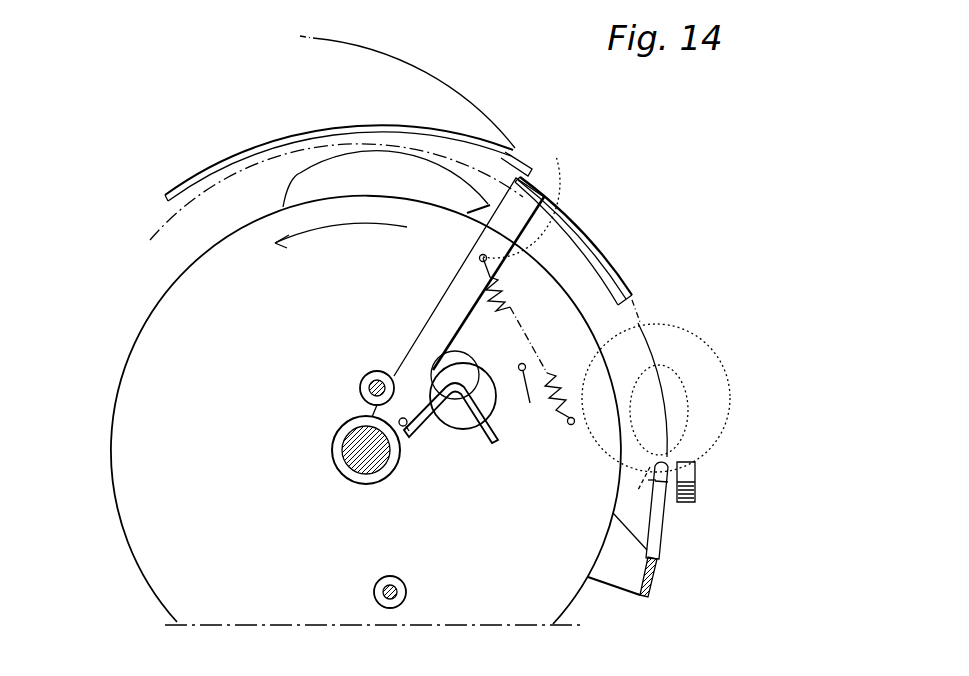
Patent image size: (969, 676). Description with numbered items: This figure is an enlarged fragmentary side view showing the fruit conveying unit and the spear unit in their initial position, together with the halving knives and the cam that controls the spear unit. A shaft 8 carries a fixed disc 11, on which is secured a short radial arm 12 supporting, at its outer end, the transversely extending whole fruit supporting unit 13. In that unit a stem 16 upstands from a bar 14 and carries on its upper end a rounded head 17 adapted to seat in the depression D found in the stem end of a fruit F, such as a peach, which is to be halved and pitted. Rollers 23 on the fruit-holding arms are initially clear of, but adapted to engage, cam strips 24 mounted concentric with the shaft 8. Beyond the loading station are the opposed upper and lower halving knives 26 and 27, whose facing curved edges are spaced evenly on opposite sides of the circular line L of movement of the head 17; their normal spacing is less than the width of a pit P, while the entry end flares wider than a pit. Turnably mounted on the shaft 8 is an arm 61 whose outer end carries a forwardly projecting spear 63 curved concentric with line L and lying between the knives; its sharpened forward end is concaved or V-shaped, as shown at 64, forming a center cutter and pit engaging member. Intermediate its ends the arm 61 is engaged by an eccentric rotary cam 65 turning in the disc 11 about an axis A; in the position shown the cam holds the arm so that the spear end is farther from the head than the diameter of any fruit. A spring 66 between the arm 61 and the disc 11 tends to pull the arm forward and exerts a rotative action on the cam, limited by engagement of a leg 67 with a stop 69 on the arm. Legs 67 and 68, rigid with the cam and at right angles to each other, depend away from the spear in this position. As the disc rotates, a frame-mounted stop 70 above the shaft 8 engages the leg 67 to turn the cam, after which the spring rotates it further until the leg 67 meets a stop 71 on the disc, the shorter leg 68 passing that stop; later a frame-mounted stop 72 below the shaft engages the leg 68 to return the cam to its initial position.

The shaft 8 is at (348, 467).
The disc 11 is at (133, 403).
The radial arm 12 is at (617, 577).
The whole fruit supporting unit 13 is at (679, 554).
The bar 14 is at (653, 577).
The stem 16 is at (660, 527).
The rounded head 17 is at (667, 463).
The roller 23 is at (697, 474).
The cam strip 24 is at (205, 165).
The upper halving knife 26 is at (453, 93).
The lower halving knife 27 is at (307, 183).
The arm 61 is at (463, 290).
The spear 63 is at (610, 266).
The concaved or V-shaped forward end 64 is at (635, 296).
The eccentric rotary cam 65 is at (450, 365).
The spring 66 is at (517, 288).
The leg 67 is at (427, 422).
The leg 68 is at (497, 436).
The stop 69 is at (410, 432).
The frame-mounted stop 70 is at (361, 378).
The stop 71 is at (530, 394).
The frame-mounted stop 72 is at (407, 578).
The circular line of movement L is at (567, 220).
The axis of rotation A is at (465, 398).
The pit P is at (682, 388).
The fruit F is at (732, 407).
The depression D is at (637, 490).